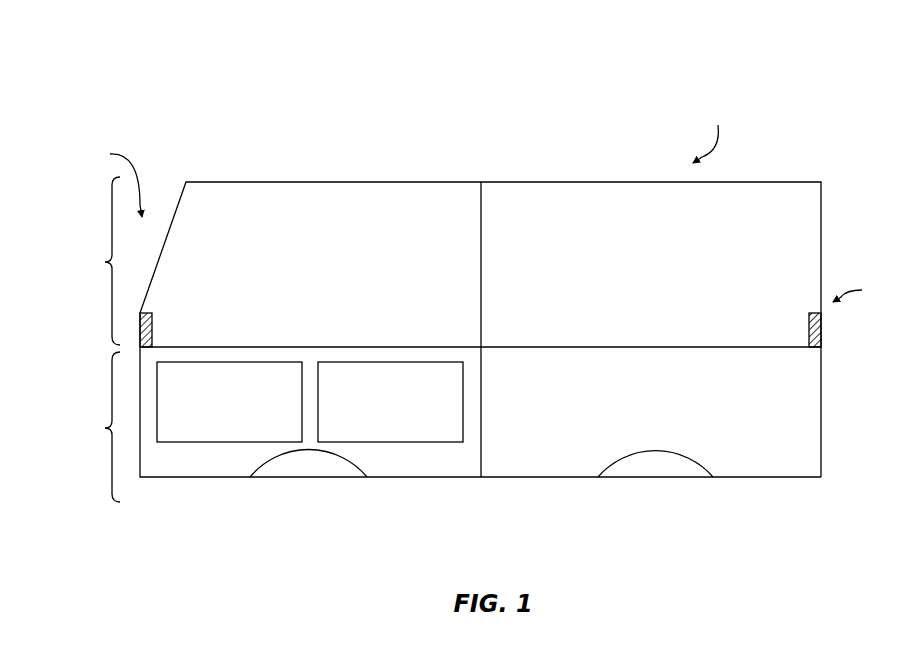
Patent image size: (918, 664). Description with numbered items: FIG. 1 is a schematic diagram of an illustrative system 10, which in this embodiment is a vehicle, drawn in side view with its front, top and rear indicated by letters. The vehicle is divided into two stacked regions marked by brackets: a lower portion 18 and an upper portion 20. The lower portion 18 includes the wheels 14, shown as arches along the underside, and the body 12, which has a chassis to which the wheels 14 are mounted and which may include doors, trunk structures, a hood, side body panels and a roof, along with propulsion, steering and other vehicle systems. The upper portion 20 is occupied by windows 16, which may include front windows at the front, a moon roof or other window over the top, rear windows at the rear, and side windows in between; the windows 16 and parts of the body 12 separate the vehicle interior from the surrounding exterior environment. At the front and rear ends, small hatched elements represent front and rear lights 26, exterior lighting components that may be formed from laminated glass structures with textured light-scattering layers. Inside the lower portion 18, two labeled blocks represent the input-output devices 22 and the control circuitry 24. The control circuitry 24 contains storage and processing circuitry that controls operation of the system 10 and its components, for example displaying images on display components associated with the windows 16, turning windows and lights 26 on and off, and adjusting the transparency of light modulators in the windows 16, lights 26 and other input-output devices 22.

The system 10 is at (589, 64).
The body 12 is at (226, 470).
The wheels 14 is at (310, 468).
The window 16 is at (165, 212).
The portion 18 is at (101, 427).
The portion 20 is at (100, 261).
The input-output devices 22 is at (183, 442).
The control circuitry 24 is at (424, 442).
The front and rear lights 26 is at (139, 316).